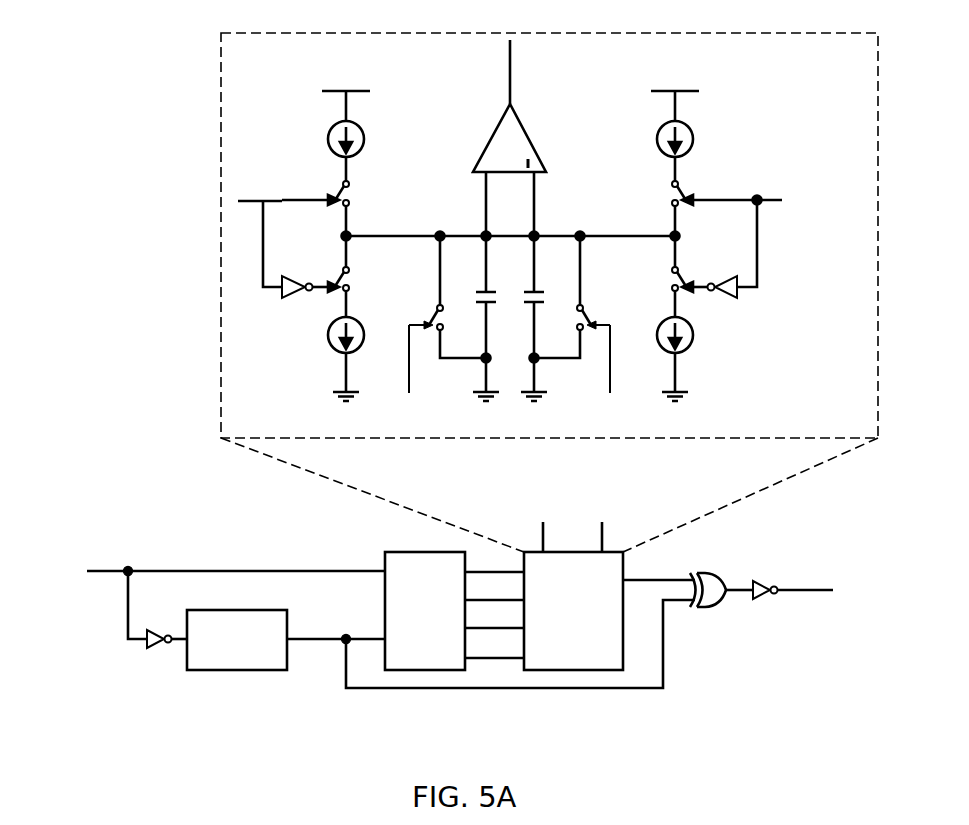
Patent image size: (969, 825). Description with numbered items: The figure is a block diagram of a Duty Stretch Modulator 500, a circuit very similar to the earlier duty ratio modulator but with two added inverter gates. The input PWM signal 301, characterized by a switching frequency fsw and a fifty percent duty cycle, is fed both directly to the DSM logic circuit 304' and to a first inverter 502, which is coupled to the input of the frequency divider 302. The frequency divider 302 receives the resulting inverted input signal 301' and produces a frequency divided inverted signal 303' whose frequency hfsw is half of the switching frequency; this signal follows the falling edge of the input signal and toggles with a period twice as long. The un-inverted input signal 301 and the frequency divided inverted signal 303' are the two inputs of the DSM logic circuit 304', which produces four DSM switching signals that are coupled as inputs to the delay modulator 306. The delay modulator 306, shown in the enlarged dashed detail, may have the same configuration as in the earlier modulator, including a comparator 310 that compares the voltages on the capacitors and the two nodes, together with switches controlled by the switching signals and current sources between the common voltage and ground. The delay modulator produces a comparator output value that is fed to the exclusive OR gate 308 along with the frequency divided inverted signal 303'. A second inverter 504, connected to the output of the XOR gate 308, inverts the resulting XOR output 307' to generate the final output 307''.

The Duty Stretch Modulator 500 is at (94, 49).
The delay modulator 306 is at (221, 101).
The comparator 310 is at (491, 138).
The input PWM signal 301 is at (236, 580).
The first inverter gate 502 is at (147, 651).
The inverted input signal 301' is at (176, 680).
The frequency divider 302 is at (250, 672).
The frequency divided inverted signal 303' is at (486, 661).
The DSM logic circuit 304' is at (454, 611).
The exclusive OR gate 308 is at (697, 609).
The XOR gate output 307' is at (741, 615).
The final output 307'' is at (812, 607).
The second inverter gate 504 is at (757, 580).